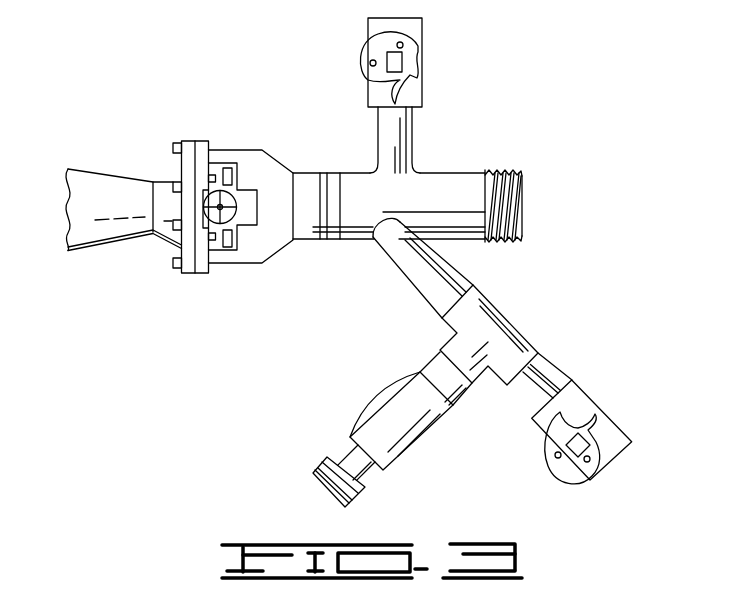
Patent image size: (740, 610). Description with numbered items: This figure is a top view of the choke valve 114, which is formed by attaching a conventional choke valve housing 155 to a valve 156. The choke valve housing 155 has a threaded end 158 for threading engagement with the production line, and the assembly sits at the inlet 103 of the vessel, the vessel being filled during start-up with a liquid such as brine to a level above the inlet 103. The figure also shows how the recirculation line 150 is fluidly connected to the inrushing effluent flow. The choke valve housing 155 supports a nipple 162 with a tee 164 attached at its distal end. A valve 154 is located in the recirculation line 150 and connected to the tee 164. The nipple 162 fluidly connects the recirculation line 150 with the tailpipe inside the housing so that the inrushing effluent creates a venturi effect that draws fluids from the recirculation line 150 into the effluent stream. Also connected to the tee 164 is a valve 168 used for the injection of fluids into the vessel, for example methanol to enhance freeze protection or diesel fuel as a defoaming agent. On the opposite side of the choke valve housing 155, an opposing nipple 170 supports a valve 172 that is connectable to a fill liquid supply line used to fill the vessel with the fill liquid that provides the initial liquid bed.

The inlet 103 is at (116, 243).
The choke valve 114 is at (265, 116).
The recirculation line 150 is at (348, 450).
The valve 154 is at (403, 433).
The choke valve housing 155 is at (447, 172).
The valve 156 is at (232, 150).
The threaded end 158 is at (521, 192).
The nipple 162 is at (400, 257).
The tee 164 is at (490, 323).
The valve 168 is at (582, 400).
The opposing nipple 170 is at (413, 133).
The valve 172 is at (368, 77).